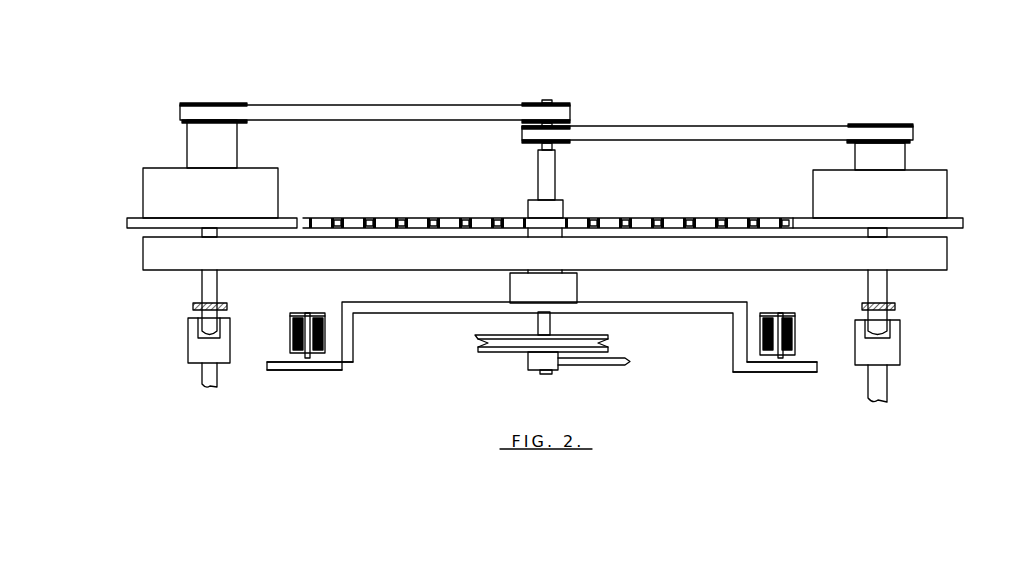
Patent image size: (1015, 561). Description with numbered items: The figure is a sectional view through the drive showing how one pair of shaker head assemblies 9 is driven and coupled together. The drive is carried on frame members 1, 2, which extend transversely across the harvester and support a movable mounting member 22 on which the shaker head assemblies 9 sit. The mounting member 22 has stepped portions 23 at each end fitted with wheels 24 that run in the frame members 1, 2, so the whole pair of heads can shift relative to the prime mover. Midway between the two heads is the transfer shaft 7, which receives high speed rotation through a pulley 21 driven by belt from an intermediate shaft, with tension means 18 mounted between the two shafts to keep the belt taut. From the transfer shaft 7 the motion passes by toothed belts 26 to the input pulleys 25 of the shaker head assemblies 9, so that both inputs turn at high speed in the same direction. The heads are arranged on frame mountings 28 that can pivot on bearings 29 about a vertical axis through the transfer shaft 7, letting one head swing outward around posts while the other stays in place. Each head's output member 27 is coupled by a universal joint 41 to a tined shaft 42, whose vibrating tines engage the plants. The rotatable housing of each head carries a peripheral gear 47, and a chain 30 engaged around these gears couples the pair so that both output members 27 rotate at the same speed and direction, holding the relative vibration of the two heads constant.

The frame member 1 is at (290, 317).
The frame member 2 is at (785, 315).
The transfer shaft 7 is at (538, 375).
The shaker head assembly 9 is at (288, 162).
The tension means 18 is at (582, 365).
The pulley 21 is at (498, 350).
The mounting member 22 is at (445, 308).
The stepped portion 23 is at (330, 368).
The wheel 24 is at (535, 103).
The input pulley 25 is at (223, 103).
The toothed belt 26 is at (427, 105).
The output member 27 is at (207, 295).
The frame mounting 28 is at (175, 260).
The bearing 29 is at (572, 282).
The chain 30 is at (415, 217).
The universal joint 41 is at (197, 355).
The shaft 42 is at (203, 382).
The peripheral gear 47 is at (127, 222).